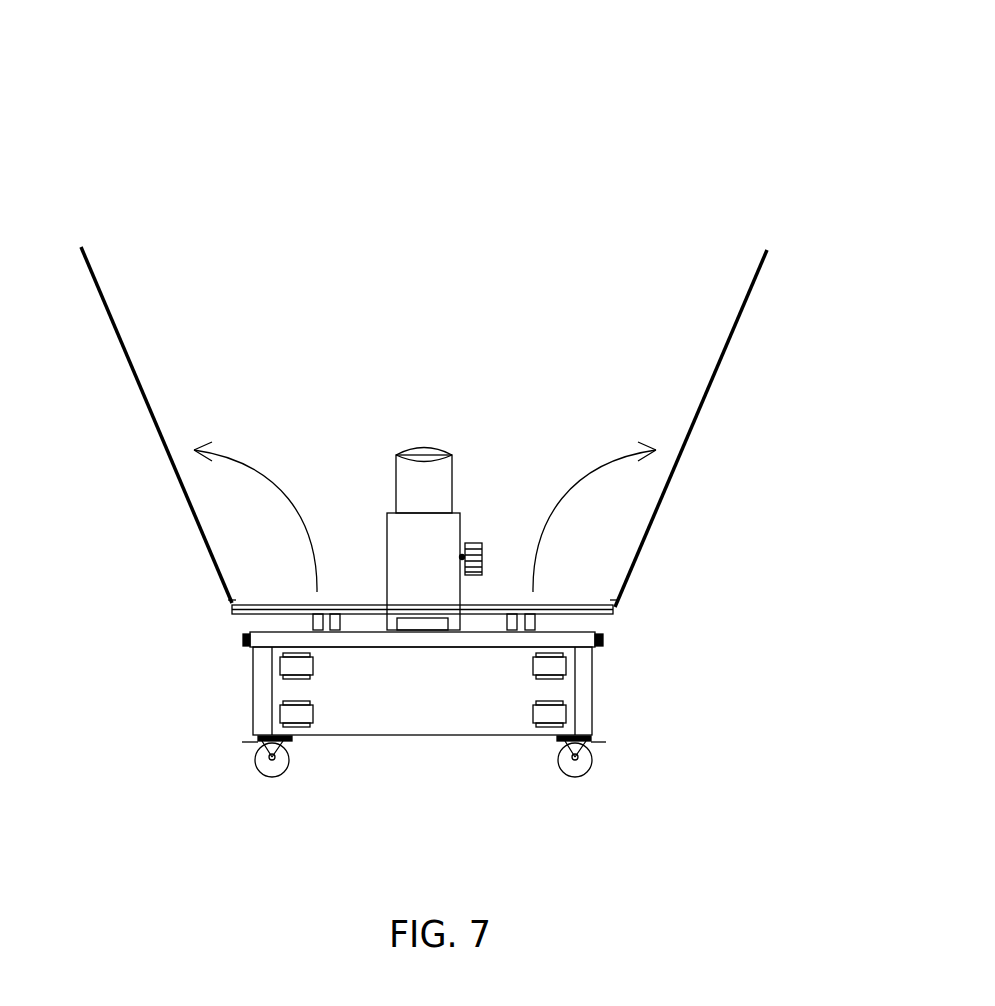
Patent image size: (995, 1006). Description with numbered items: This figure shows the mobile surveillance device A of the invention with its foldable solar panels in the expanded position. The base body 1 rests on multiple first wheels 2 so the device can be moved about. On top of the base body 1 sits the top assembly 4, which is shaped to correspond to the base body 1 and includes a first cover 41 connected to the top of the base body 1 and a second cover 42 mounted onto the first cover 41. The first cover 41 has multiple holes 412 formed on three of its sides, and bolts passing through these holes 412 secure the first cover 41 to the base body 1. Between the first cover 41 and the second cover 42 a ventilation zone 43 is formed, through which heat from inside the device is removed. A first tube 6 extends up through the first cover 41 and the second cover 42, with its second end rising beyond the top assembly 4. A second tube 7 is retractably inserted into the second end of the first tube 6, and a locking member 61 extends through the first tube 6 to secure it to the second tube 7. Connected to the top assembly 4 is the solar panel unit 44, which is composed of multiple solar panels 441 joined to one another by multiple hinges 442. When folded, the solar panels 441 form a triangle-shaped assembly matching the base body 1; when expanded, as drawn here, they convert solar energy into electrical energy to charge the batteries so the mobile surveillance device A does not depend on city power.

The base body 1 is at (403, 735).
The first wheels 2 is at (597, 760).
The top assembly 4 is at (450, 453).
The first cover 41 is at (257, 636).
The holes 412 is at (243, 642).
The second cover 42 is at (605, 616).
The ventilation zone 43 is at (307, 621).
The solar panel unit 44 is at (722, 400).
The solar panels 441 is at (731, 331).
The hinges 442 is at (242, 601).
The first tube 6 is at (387, 537).
The locking member 61 is at (478, 542).
The second tube 7 is at (452, 465).
The mobile surveillance device A is at (316, 178).